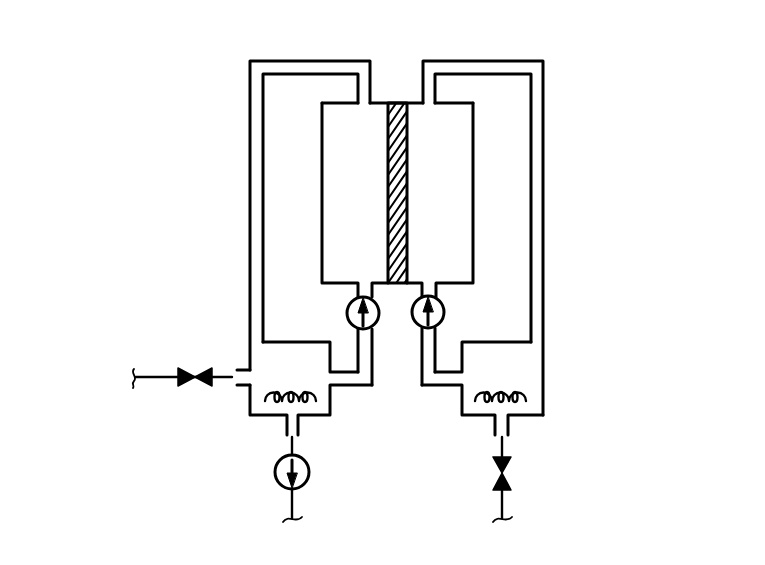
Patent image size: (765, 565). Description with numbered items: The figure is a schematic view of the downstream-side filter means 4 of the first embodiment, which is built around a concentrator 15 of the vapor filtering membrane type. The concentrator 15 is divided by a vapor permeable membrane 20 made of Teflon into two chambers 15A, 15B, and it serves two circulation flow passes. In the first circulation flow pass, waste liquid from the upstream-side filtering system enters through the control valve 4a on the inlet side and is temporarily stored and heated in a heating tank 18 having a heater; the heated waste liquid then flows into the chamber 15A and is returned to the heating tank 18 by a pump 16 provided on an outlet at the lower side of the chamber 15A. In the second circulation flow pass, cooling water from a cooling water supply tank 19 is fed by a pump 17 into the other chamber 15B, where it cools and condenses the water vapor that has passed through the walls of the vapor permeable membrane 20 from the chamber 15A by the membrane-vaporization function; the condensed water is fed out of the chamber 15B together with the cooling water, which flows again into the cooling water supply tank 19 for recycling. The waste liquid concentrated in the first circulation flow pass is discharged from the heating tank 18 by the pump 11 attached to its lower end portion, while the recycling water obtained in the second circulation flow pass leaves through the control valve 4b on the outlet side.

The downstream-side filter means 4 is at (549, 140).
The control valve 4a is at (191, 366).
The control valve 4b is at (513, 473).
The pump 11 is at (310, 473).
The concentrator 15 is at (428, 195).
The chamber 15A is at (378, 226).
The chamber 15B is at (467, 226).
The pump 16 is at (347, 312).
The pump 17 is at (445, 311).
The heating tank 18 is at (247, 412).
The cooling water supply tank 19 is at (546, 378).
The vapor permeable membrane 20 is at (388, 140).